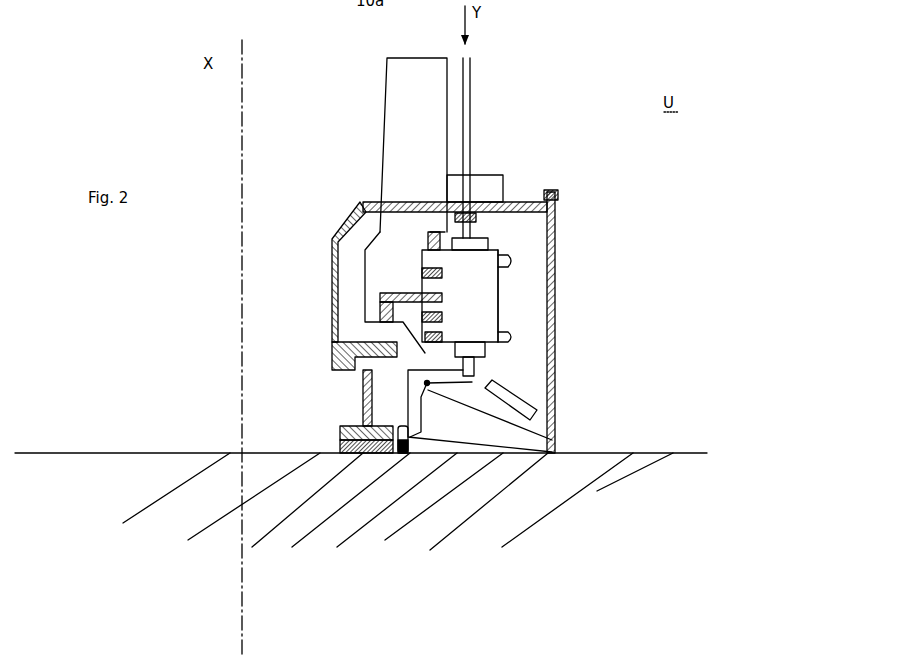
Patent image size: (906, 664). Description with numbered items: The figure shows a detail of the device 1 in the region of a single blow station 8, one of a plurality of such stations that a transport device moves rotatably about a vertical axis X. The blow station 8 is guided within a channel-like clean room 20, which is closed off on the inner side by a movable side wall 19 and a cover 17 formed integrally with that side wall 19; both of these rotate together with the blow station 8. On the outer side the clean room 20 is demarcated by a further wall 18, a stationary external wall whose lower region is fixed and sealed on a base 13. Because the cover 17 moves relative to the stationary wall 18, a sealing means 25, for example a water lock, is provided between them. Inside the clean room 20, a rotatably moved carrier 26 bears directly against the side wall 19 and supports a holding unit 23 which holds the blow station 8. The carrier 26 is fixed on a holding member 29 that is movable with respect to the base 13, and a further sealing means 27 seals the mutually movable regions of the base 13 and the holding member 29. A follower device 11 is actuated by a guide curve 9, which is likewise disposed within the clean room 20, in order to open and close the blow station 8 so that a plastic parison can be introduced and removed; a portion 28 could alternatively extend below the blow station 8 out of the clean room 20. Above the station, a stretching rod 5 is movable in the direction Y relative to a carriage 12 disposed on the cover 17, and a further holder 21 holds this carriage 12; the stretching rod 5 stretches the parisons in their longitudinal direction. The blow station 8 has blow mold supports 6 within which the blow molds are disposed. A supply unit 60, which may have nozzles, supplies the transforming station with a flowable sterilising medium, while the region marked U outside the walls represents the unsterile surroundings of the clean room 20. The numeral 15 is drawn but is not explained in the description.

The device 1 is at (337, 117).
The stretching rod 5 is at (467, 128).
The blow mold support 6 is at (488, 317).
The blow station 8 is at (487, 283).
The guide curve 9 is at (467, 455).
The follower device 11 is at (553, 450).
The carriage 12 is at (487, 183).
The base 13 is at (593, 493).
The nut 15 is at (535, 214).
The cover 17 is at (410, 203).
The wall 18 is at (553, 260).
The side wall 19 is at (332, 283).
The clean room 20 is at (342, 213).
The holder 21 is at (430, 100).
The holding unit 23 is at (400, 292).
The sealing means 25 is at (553, 193).
The carrier 26 is at (353, 332).
The further sealing means 27 is at (340, 442).
The portion 28 is at (477, 370).
The holding member 29 is at (363, 407).
The supply unit 60 is at (502, 398).